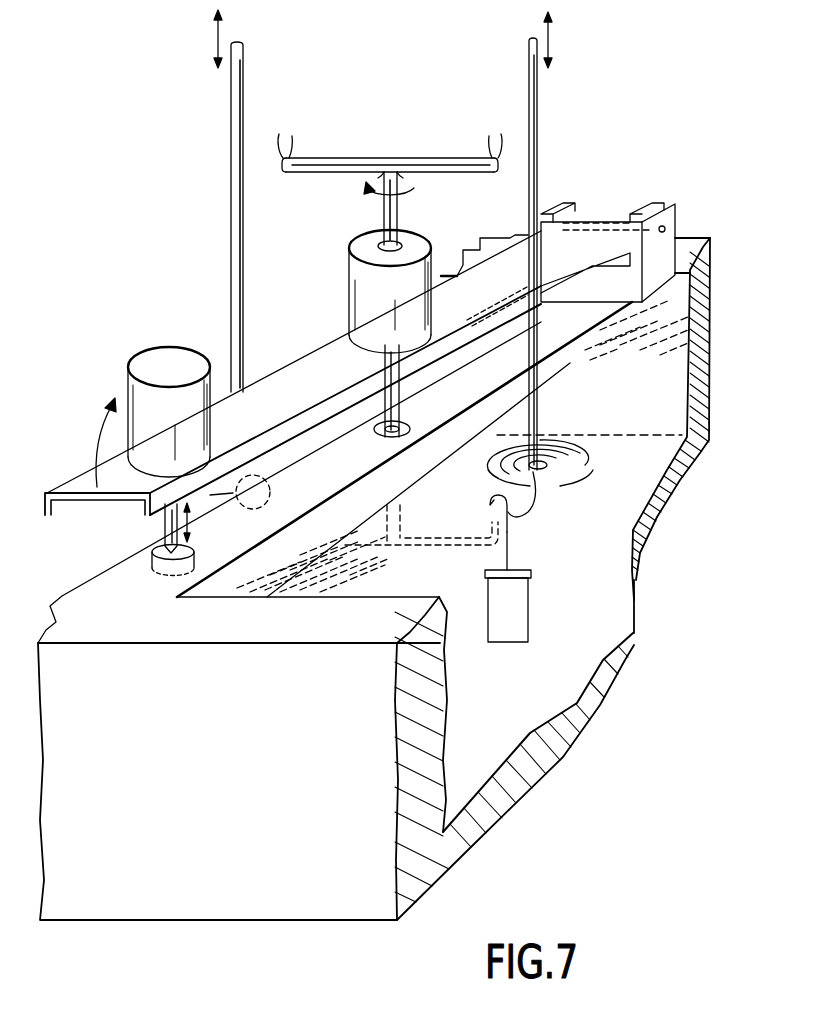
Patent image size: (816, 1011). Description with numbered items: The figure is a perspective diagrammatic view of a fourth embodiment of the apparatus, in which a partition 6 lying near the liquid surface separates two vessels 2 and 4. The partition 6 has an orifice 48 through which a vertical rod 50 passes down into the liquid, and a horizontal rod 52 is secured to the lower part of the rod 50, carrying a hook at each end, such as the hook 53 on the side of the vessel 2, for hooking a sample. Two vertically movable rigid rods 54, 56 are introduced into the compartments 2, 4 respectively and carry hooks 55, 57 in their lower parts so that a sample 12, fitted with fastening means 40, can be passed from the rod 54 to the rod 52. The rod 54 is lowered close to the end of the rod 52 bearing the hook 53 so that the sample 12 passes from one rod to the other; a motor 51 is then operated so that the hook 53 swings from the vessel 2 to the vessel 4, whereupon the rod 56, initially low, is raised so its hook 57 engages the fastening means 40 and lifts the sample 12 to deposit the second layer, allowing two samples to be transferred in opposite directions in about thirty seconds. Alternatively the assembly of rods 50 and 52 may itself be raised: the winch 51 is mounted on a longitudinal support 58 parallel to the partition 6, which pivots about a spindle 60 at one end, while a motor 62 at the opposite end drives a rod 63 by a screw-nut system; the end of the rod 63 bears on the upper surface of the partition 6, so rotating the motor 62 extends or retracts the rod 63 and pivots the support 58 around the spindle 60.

The vessel 2 is at (652, 392).
The vessel 4 is at (80, 571).
The partition 6 is at (250, 520).
The sample 12 is at (513, 625).
The fastening means 40 is at (546, 550).
The orifice 48 is at (377, 436).
The vertical rod 50 is at (412, 386).
The motor (winch) 51 is at (358, 243).
The horizontal rod 52 is at (408, 548).
The hook 53 is at (490, 530).
The vertically movable rigid rod 54 is at (538, 92).
The hook 55 is at (546, 494).
The vertically movable rigid rod 56 is at (236, 92).
The hook 57 is at (265, 475).
The longitudinal support 58 is at (318, 368).
The spindle 60 is at (666, 229).
The motor 62 is at (145, 367).
The rod 63 is at (165, 530).